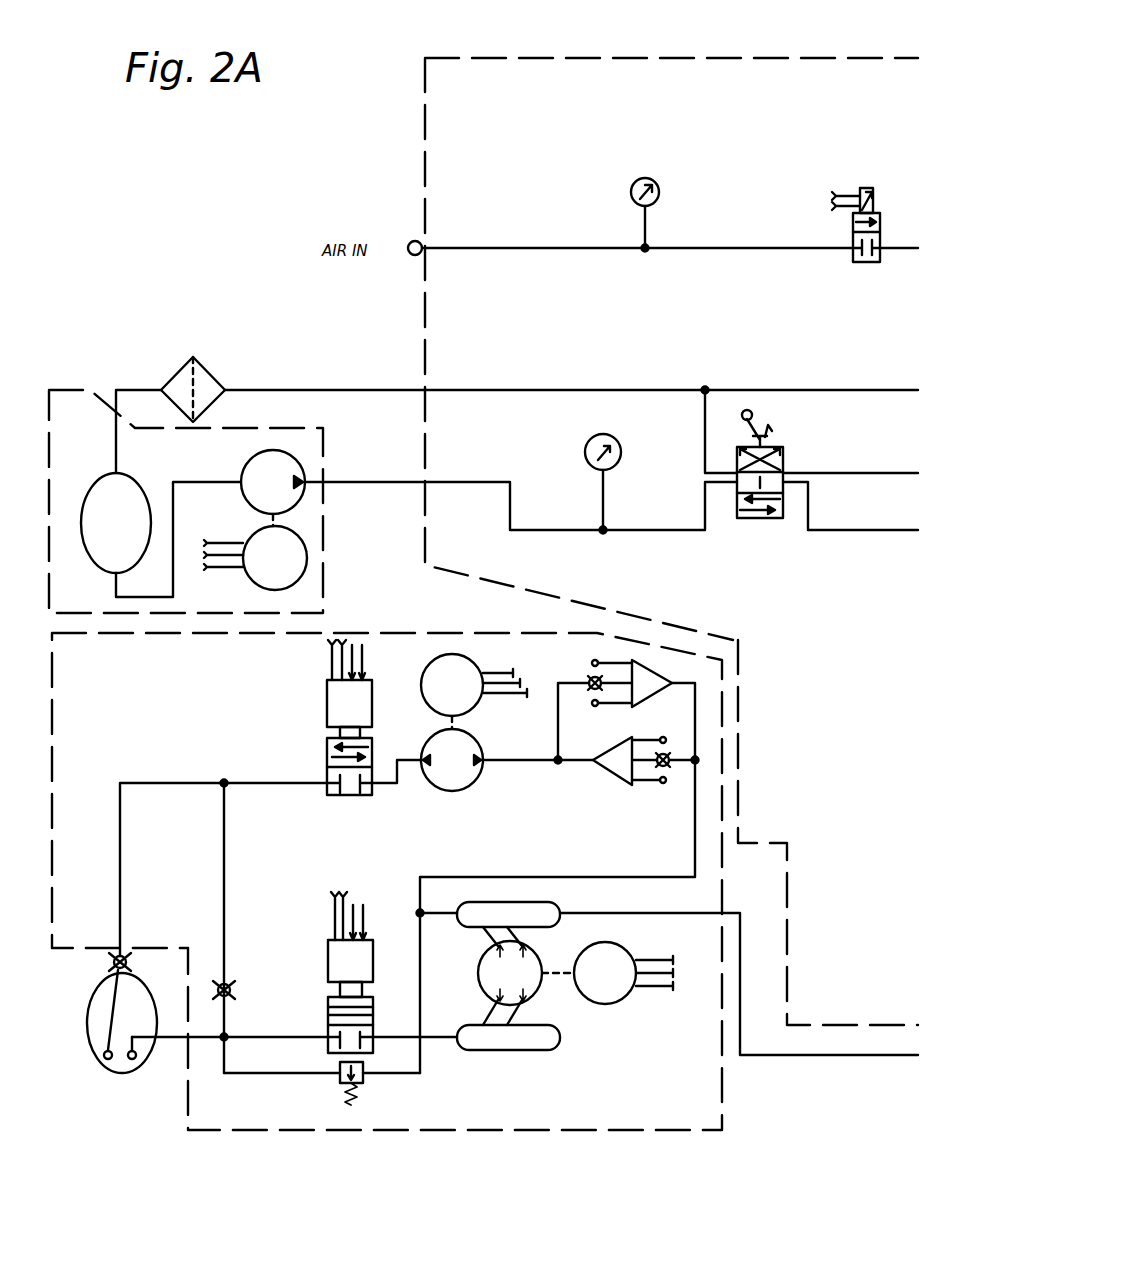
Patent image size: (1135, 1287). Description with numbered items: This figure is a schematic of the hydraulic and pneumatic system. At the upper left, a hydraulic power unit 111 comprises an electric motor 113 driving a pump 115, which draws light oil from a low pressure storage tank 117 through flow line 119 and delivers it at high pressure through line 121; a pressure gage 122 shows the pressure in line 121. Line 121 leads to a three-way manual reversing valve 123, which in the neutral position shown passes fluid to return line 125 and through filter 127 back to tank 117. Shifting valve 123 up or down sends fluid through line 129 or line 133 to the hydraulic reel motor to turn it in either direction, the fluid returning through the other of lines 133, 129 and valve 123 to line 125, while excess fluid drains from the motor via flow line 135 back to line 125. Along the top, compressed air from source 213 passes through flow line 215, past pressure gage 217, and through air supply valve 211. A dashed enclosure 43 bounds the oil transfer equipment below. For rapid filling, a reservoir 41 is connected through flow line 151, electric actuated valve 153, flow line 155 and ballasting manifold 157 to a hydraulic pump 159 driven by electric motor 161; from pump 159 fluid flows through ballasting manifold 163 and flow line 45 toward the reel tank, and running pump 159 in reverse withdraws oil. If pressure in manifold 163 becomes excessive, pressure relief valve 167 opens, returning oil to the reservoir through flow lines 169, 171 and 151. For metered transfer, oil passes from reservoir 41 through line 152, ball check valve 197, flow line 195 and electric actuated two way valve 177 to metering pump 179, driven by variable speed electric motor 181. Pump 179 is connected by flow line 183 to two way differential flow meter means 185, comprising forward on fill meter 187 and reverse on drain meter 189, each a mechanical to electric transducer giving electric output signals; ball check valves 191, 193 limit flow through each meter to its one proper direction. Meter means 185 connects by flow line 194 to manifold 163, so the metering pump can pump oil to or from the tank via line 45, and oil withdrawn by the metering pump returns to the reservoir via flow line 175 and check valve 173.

The compressed air source 213 is at (410, 256).
The flow line 215 is at (532, 253).
The pressure gage 217 is at (660, 196).
The air supply valve 211 is at (866, 262).
The hydraulic power unit 111 is at (323, 458).
The filter 127 is at (205, 365).
The return line 125 is at (498, 390).
The flow line 135 is at (815, 390).
The low pressure storage tank 117 is at (127, 540).
The flow line 119 is at (207, 482).
The pump 115 is at (300, 505).
The electric motor 113 is at (307, 545).
The high pressure line 121 is at (657, 530).
The pressure gage 122 is at (585, 448).
The manual reversing valve 123 is at (760, 518).
The flow line 133 is at (843, 473).
The flow line 129 is at (853, 530).
The processing unit enclosure 43 is at (612, 1130).
The flow line 195 is at (122, 890).
The flow line 175 is at (226, 890).
The electric actuated two way valve 177 is at (352, 795).
The variable speed electric motor 181 is at (421, 680).
The metering pump 179 is at (456, 791).
The flow line 183 is at (530, 762).
The ball check valve 193 is at (592, 676).
The reverse on drain meter 189 is at (648, 685).
The differential flow meter means 185 is at (626, 726).
The forward on fill meter 187 is at (608, 768).
The ball check valve 191 is at (672, 768).
The flow line 194 is at (568, 877).
The ballasting manifold 163 is at (558, 905).
The flow line 45 is at (655, 918).
The hydraulic pump 159 is at (478, 973).
The electric motor 161 is at (615, 1003).
The flow line 155 is at (440, 1042).
The ballasting manifold 157 is at (540, 1052).
The electric actuated valve 153 is at (326, 1008).
The flow line 151 is at (170, 1042).
The reservoir 41 is at (118, 1080).
The line 152 is at (107, 1025).
The ball check valve 197 is at (108, 962).
The check valve 173 is at (232, 988).
The flow line 171 is at (225, 1062).
The pressure relief valve 167 is at (340, 1080).
The flow line 169 is at (408, 1078).